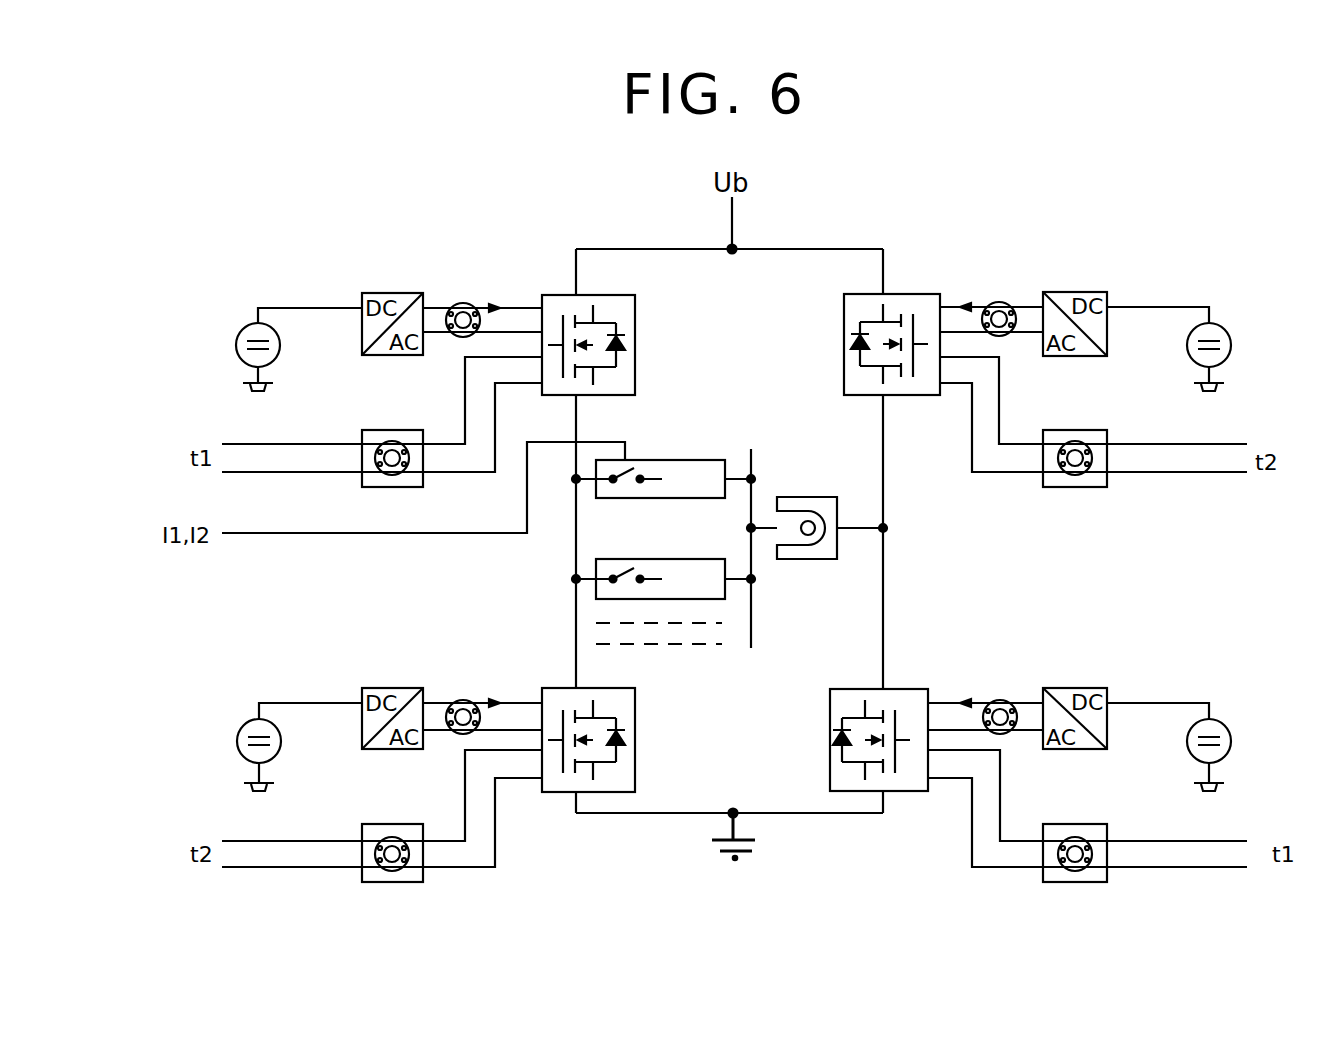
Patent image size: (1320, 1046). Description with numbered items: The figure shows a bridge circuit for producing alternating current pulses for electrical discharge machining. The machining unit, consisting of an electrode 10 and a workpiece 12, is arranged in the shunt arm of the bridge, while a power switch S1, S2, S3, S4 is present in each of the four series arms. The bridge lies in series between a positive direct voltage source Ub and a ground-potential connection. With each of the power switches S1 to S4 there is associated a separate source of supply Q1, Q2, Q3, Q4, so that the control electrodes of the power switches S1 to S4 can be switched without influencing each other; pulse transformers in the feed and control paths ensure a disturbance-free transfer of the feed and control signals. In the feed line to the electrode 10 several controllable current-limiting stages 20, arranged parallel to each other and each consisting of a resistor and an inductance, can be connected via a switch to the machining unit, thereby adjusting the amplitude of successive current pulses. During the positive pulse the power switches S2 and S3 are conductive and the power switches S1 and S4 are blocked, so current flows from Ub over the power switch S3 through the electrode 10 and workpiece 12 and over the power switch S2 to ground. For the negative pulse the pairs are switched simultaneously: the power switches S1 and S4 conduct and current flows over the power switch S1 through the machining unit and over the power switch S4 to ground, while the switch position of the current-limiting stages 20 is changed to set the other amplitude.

The electrode 10 is at (808, 522).
The workpiece 12 is at (825, 552).
The controllable current-limiting stages 20 is at (700, 463).
The power switch S1 is at (627, 381).
The power switch S2 is at (628, 703).
The power switch S3 is at (844, 367).
The power switch S4 is at (830, 712).
The source of supply Q1 is at (238, 357).
The source of supply Q2 is at (242, 755).
The source of supply Q3 is at (1222, 336).
The source of supply Q4 is at (1222, 732).